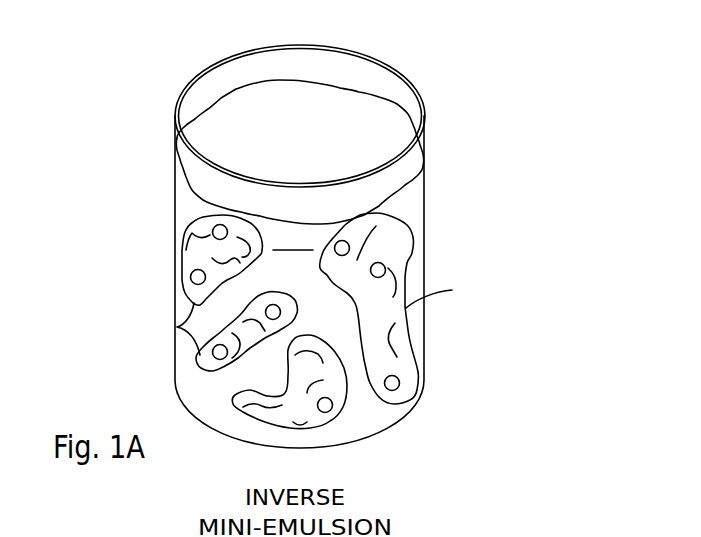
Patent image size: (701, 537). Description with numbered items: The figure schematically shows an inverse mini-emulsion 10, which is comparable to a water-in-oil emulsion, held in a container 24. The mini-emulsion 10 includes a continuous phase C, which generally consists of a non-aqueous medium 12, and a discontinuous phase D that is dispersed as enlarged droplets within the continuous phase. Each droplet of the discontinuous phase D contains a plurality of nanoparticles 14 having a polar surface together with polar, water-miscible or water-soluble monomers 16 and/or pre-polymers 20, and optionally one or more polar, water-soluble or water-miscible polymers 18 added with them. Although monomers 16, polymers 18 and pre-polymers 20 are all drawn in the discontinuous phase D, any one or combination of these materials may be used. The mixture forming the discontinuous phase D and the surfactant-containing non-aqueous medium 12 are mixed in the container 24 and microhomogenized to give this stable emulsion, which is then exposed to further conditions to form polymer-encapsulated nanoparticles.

The mini-emulsion 10 is at (353, 108).
The container 24 is at (422, 137).
The non-aqueous medium 12 is at (293, 238).
The monomer 16 is at (386, 270).
The nanoparticles 14 is at (191, 275).
The polymer 18 is at (190, 233).
The pre-polymer 20 is at (349, 245).
The discontinuous phase D is at (177, 327).